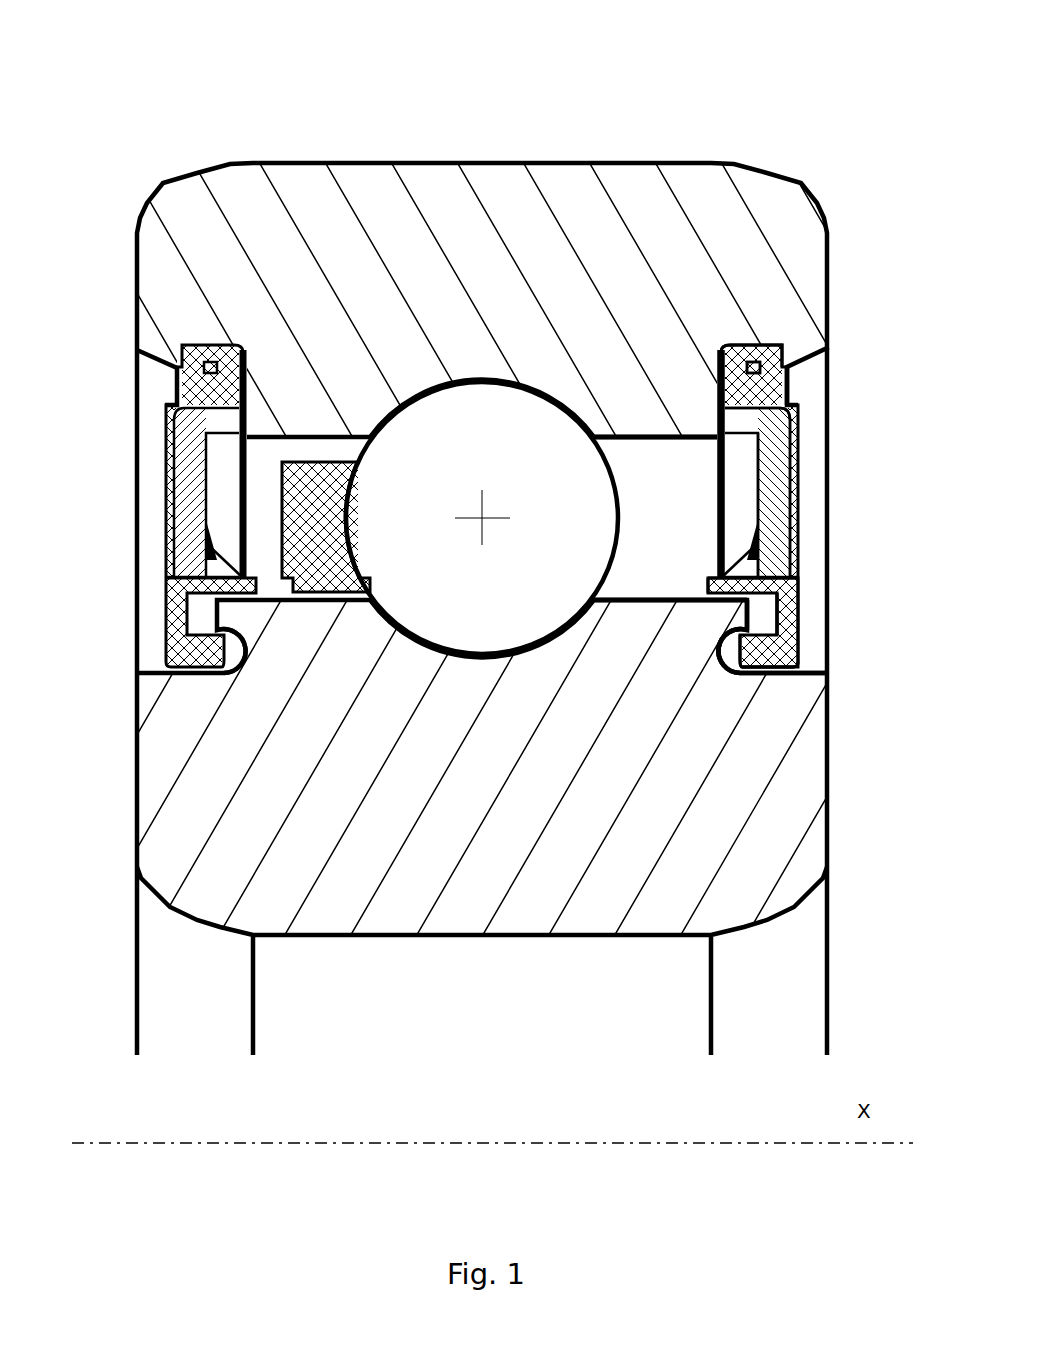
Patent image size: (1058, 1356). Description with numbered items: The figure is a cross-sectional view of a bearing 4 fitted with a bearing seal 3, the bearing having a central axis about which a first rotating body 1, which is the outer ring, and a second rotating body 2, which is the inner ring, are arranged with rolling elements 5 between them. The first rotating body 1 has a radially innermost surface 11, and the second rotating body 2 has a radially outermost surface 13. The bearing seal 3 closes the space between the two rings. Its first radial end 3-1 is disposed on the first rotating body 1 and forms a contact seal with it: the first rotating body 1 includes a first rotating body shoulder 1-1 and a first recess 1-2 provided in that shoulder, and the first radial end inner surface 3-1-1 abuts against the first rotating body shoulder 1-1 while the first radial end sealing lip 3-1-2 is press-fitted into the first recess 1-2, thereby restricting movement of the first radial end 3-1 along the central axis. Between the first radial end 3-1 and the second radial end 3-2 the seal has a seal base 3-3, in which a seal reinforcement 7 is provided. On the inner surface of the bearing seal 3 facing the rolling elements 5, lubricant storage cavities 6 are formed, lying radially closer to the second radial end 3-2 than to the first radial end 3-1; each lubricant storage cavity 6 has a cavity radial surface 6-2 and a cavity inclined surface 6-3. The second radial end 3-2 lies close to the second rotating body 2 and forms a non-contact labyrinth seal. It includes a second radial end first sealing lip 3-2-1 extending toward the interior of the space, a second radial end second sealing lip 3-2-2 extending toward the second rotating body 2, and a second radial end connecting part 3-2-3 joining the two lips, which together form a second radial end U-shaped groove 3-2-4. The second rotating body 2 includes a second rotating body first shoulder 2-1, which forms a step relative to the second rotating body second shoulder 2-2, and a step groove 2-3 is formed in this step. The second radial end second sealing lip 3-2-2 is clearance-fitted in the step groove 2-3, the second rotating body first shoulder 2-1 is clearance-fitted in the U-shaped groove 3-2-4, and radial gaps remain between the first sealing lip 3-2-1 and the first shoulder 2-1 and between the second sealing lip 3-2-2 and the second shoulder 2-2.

The first rotating body 1 is at (792, 240).
The first rotating body shoulder 1-1 is at (615, 437).
The first recess 1-2 is at (762, 365).
The radially innermost surface 11 is at (690, 437).
The radially outermost surface 13 is at (692, 600).
The second rotating body 2 is at (642, 916).
The second rotating body first shoulder 2-1 is at (708, 601).
The second rotating body second shoulder 2-2 is at (767, 687).
The step groove 2-3 is at (728, 655).
The bearing seal 3 is at (797, 477).
The first radial end 3-1 is at (788, 378).
The first radial end inner surface 3-1-1 is at (737, 345).
The first radial end sealing lip 3-1-2 is at (778, 350).
The second radial end 3-2 is at (776, 668).
The second radial end first sealing lip 3-2-1 is at (708, 578).
The second radial end second sealing lip 3-2-2 is at (766, 690).
The second radial end connecting part 3-2-3 is at (783, 622).
The second radial end U-shaped groove 3-2-4 is at (800, 637).
The seal base 3-3 is at (783, 525).
The bearing 4 is at (748, 82).
The rolling elements 5 is at (400, 590).
The lubricant storage cavities 6 is at (703, 634).
The cavity radial surface 6-2 is at (762, 558).
The cavity inclined surface 6-3 is at (797, 582).
The seal reinforcement 7 is at (767, 447).